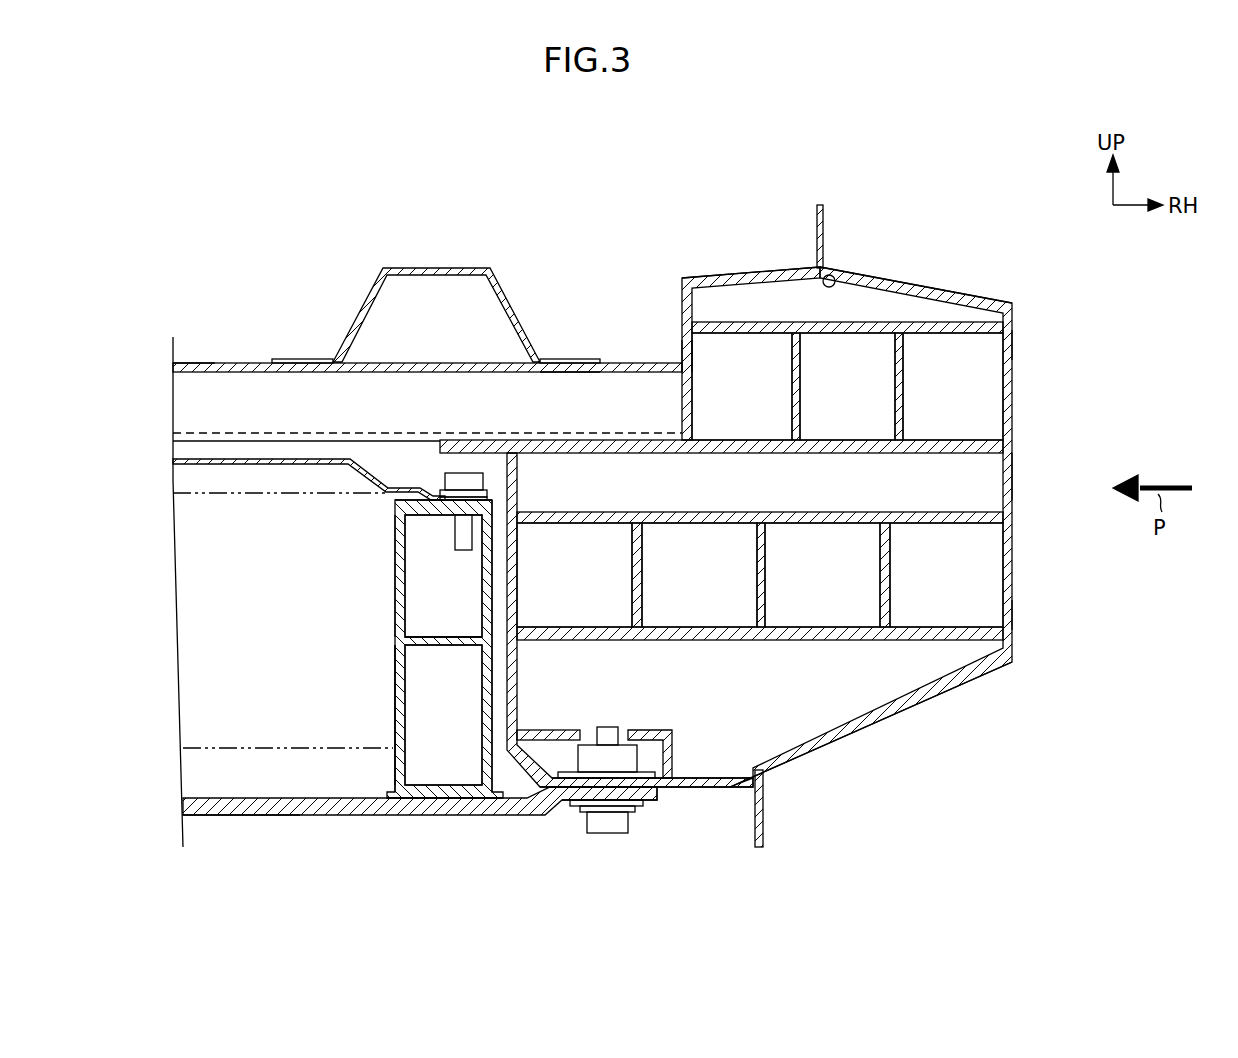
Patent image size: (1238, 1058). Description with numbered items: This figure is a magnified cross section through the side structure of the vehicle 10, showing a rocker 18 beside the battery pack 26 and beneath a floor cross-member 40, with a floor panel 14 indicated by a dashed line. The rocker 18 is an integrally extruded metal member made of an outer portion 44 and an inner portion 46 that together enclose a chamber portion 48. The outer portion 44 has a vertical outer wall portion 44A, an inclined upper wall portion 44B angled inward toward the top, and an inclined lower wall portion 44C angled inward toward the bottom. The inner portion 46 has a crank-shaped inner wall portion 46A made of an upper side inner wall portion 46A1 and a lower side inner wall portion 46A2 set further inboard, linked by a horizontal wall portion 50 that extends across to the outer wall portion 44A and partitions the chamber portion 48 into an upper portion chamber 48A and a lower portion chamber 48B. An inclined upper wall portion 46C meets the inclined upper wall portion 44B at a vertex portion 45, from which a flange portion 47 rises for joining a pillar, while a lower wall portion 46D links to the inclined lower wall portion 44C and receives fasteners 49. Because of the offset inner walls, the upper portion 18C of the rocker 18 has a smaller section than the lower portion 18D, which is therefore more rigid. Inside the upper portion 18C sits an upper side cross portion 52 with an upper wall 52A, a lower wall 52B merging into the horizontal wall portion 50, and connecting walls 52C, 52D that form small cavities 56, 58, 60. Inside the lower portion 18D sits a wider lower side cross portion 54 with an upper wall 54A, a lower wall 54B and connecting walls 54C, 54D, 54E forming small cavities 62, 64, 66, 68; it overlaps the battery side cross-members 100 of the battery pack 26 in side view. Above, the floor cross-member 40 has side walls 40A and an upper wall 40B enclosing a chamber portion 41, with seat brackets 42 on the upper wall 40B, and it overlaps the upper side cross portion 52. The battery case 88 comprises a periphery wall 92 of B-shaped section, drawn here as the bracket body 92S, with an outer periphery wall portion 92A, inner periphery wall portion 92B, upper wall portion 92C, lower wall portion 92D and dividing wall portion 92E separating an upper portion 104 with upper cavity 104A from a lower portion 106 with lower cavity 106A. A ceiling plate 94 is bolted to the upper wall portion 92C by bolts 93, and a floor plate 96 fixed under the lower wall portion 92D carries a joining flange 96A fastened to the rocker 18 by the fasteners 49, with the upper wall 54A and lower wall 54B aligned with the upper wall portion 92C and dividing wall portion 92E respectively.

The vehicle 10 is at (972, 200).
The floor panel 14 is at (188, 433).
The rocker 18 is at (987, 262).
The upper portion of the rocker 18C is at (1013, 342).
The lower portion of the rocker 18D is at (1013, 612).
The battery pack 26 is at (170, 605).
The battery side cross-member 100 is at (212, 668).
The floor cross-member 40 is at (420, 331).
The side wall 40A is at (188, 392).
The upper wall 40B is at (248, 366).
The chamber portion 41 is at (325, 416).
The bracket 42 is at (359, 313).
The outer portion 44 is at (911, 513).
The outer wall portion 44A is at (1012, 470).
The inclined upper wall portion 44B is at (898, 288).
The inclined lower wall portion 44C is at (895, 708).
The vertex portion 45 is at (830, 276).
The inner portion 46 is at (626, 525).
The inner wall portion 46A is at (593, 522).
The upper side inner wall portion 46A1 is at (682, 357).
The lower side inner wall portion 46A2 is at (593, 534).
The inclined upper wall portion 46C is at (752, 283).
The lower wall portion 46D is at (710, 788).
The flange portion 47 is at (816, 212).
The chamber portion 48 is at (721, 533).
The upper portion chamber 48A is at (721, 395).
The lower portion chamber 48B is at (760, 624).
The fastener 49 is at (613, 826).
The horizontal wall portion 50 is at (572, 437).
The upper side cross portion 52 is at (721, 395).
The upper wall 52A is at (785, 327).
The lower wall 52B is at (719, 454).
The connecting wall 52C is at (797, 362).
The connecting wall 52D is at (900, 360).
The lower side cross portion 54 is at (760, 583).
The upper wall 54A is at (858, 511).
The lower wall 54B is at (783, 643).
The connecting wall 54C is at (638, 550).
The connecting wall 54D is at (763, 553).
The connecting wall 54E is at (888, 553).
The small cavity 56 is at (752, 402).
The small cavity 58 is at (862, 394).
The small cavity 60 is at (962, 402).
The small cavity 62 is at (585, 607).
The small cavity 64 is at (710, 607).
The small cavity 66 is at (835, 607).
The small cavity 68 is at (962, 607).
The battery case 88 is at (257, 818).
The periphery wall 92 is at (446, 701).
The bracket body 92S is at (446, 701).
The outer periphery wall portion 92A is at (495, 688).
The inner periphery wall portion 92B is at (400, 686).
The upper wall portion 92C is at (440, 518).
The lower wall portion 92D is at (432, 800).
The dividing wall portion 92E is at (430, 638).
The bolt 93 is at (452, 478).
The ceiling plate 94 is at (218, 462).
The floor plate 96 is at (420, 832).
The joining flange 96A is at (585, 812).
The upper portion 104 is at (397, 578).
The upper cavity 104A is at (470, 599).
The lower portion 106 is at (398, 729).
The lower cavity 106A is at (470, 737).